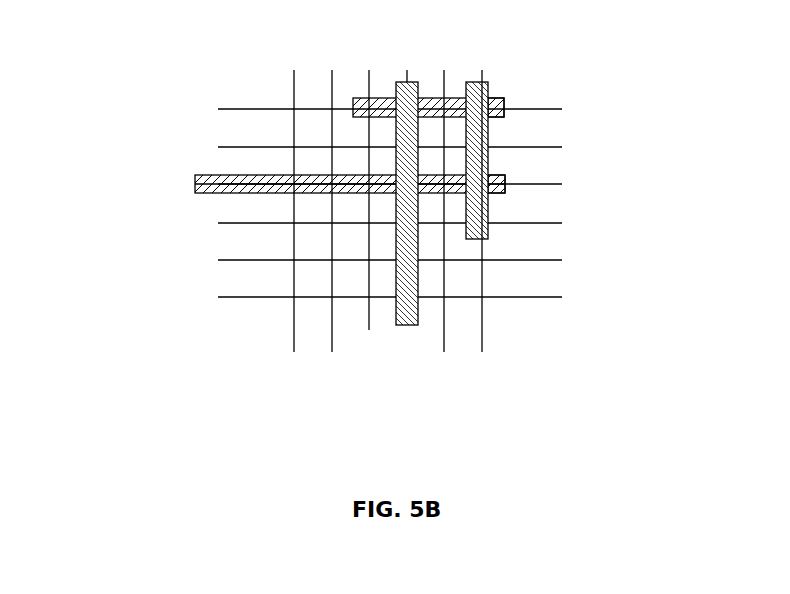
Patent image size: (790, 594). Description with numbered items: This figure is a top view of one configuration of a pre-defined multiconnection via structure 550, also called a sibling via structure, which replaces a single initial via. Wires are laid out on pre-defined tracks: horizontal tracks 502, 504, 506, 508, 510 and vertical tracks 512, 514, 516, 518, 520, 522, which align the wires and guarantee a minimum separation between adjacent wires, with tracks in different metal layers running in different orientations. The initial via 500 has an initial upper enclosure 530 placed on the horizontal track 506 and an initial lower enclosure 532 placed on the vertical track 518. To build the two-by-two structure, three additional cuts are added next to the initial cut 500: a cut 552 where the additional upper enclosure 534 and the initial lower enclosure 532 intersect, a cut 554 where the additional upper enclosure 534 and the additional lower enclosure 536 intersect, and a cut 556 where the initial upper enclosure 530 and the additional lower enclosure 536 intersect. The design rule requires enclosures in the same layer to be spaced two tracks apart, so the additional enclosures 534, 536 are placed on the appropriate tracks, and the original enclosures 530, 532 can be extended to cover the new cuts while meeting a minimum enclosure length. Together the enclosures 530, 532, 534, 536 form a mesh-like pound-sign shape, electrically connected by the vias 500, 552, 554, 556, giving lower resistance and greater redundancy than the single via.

The multiconnection via structure 550 is at (152, 57).
The initial via 500 is at (393, 180).
The horizontal track 502 is at (562, 109).
The horizontal track 504 is at (562, 147).
The horizontal track 506 is at (562, 184).
The horizontal track 508 is at (562, 223).
The horizontal track 510 is at (562, 260).
The vertical track 512 is at (298, 352).
The vertical track 514 is at (332, 352).
The vertical track 516 is at (369, 330).
The vertical track 518 is at (406, 327).
The vertical track 520 is at (445, 323).
The vertical track 522 is at (482, 310).
The initial upper enclosure 530 is at (502, 182).
The initial lower enclosure 532 is at (403, 105).
The additional upper enclosure 534 is at (355, 102).
The additional lower enclosure 536 is at (487, 93).
The additional cut 552 is at (401, 104).
The additional cut 554 is at (478, 107).
The additional cut 556 is at (487, 202).